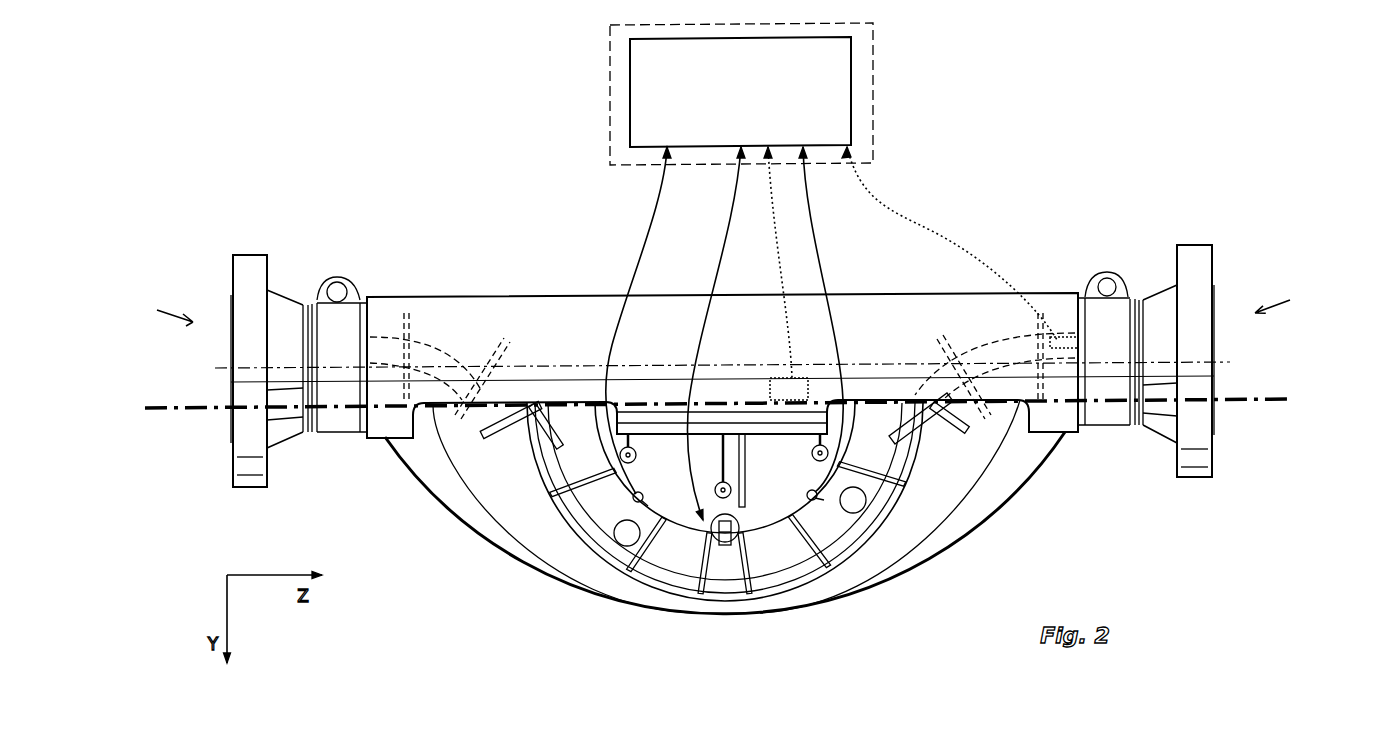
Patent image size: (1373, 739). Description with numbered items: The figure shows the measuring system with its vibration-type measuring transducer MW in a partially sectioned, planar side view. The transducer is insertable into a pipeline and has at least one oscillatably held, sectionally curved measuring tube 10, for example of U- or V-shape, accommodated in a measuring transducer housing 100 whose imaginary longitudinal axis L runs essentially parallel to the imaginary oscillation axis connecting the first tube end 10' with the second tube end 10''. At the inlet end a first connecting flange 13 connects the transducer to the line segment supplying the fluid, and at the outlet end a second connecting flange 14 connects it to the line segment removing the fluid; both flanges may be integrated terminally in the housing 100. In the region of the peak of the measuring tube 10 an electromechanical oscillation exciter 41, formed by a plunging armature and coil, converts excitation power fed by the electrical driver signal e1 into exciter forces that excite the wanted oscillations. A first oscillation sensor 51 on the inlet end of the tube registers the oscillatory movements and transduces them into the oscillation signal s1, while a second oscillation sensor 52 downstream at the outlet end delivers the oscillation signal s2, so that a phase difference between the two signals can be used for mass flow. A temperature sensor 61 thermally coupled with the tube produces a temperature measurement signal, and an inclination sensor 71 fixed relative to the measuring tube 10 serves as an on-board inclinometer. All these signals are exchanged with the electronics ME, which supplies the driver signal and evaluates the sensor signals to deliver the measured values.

The measuring transducer housing 100 is at (583, 297).
The measuring transducer MW is at (590, 333).
The electronics ME is at (722, 104).
The measuring tube 10 is at (711, 530).
The first tube end 10' is at (452, 443).
The second tube end 10'' is at (982, 437).
The first connecting flange 13 is at (248, 262).
The second connecting flange 14 is at (1195, 258).
The oscillation exciter 41 is at (715, 533).
The oscillation sensor 51 is at (633, 496).
The second oscillation sensor 52 is at (815, 498).
The temperature sensor 61 is at (1057, 345).
The inclination sensor 71 is at (783, 392).
The oscillation signal s1 is at (638, 320).
The oscillation measurement signal s2 is at (828, 319).
The driver signal e1 is at (713, 333).
The longitudinal axis L is at (737, 354).